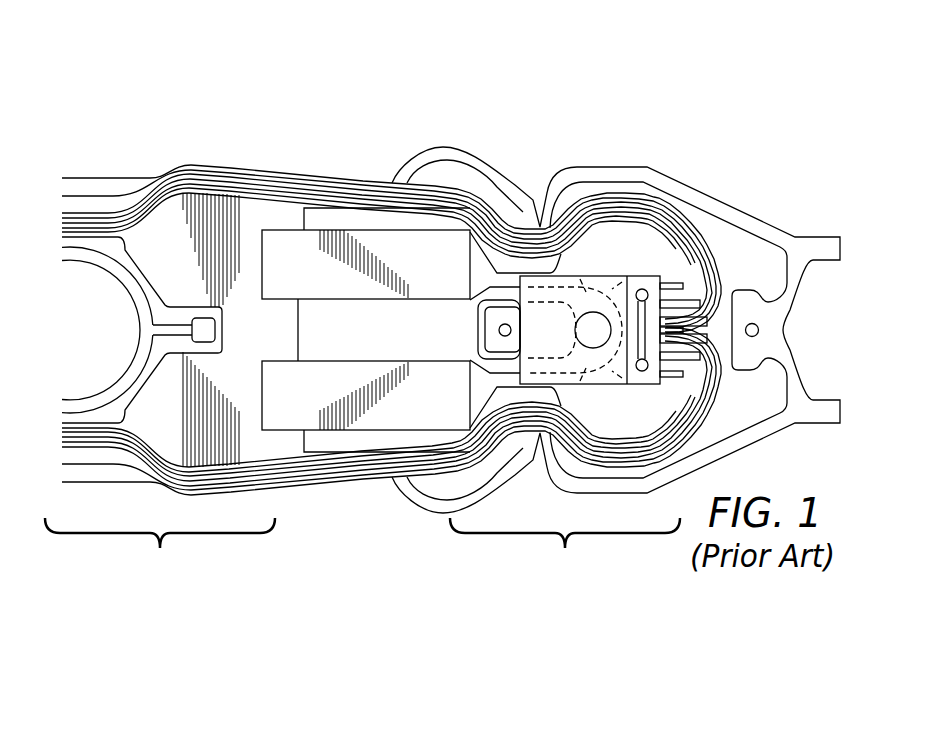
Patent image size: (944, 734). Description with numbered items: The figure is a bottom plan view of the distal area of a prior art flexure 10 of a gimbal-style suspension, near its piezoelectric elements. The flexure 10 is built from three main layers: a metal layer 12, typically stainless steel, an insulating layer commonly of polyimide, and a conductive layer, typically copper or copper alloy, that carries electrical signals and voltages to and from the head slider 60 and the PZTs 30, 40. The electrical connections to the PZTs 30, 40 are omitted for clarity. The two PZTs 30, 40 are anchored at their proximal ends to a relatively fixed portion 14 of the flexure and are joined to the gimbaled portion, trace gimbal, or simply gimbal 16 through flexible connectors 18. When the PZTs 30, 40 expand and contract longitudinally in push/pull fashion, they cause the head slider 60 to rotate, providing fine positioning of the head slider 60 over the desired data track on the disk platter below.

The flexure 10 is at (398, 116).
The metal layer 12 is at (104, 150).
The relatively fixed portion 14 is at (160, 548).
The gimbal 16 is at (565, 548).
The flexible connectors 18 is at (480, 267).
The PZT 30 is at (283, 247).
The PZT 40 is at (390, 415).
The head slider 60 is at (593, 310).